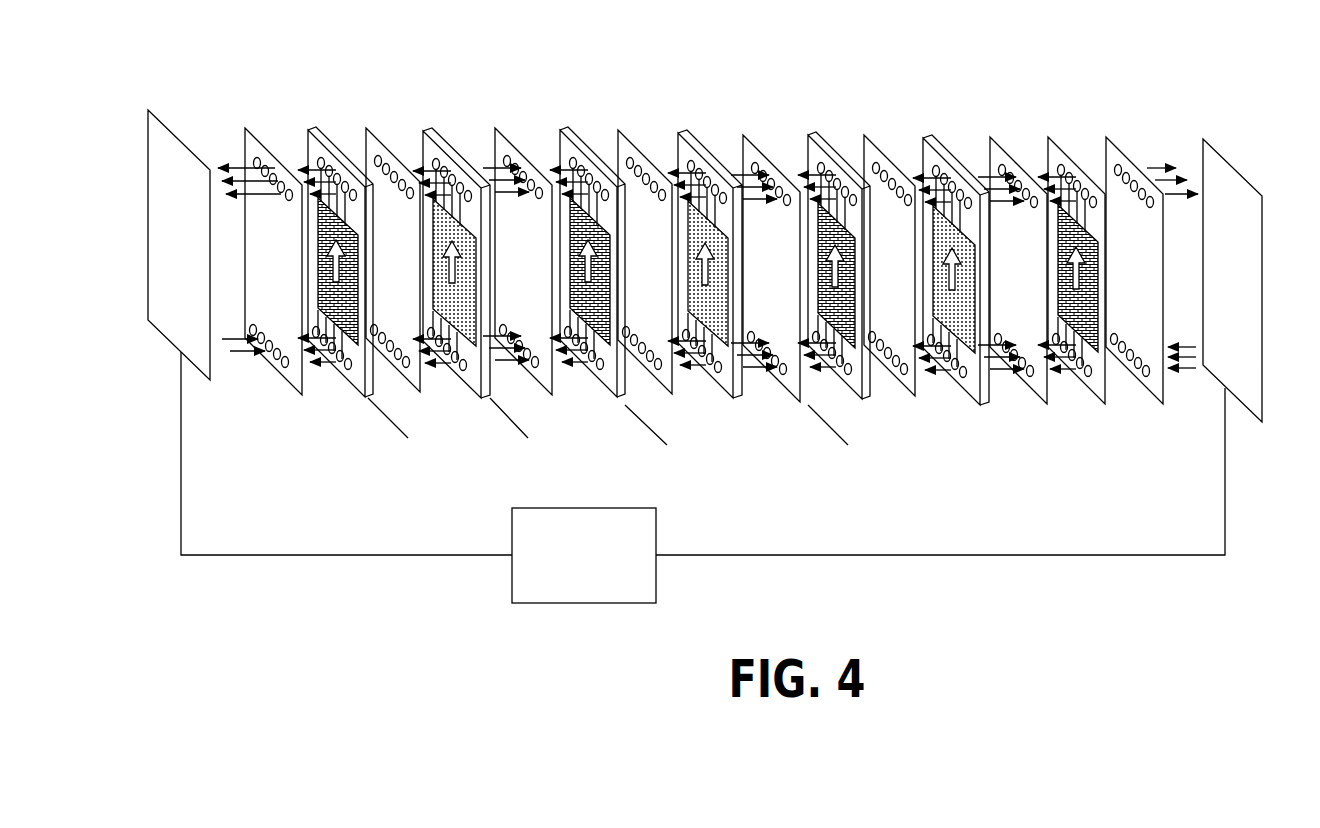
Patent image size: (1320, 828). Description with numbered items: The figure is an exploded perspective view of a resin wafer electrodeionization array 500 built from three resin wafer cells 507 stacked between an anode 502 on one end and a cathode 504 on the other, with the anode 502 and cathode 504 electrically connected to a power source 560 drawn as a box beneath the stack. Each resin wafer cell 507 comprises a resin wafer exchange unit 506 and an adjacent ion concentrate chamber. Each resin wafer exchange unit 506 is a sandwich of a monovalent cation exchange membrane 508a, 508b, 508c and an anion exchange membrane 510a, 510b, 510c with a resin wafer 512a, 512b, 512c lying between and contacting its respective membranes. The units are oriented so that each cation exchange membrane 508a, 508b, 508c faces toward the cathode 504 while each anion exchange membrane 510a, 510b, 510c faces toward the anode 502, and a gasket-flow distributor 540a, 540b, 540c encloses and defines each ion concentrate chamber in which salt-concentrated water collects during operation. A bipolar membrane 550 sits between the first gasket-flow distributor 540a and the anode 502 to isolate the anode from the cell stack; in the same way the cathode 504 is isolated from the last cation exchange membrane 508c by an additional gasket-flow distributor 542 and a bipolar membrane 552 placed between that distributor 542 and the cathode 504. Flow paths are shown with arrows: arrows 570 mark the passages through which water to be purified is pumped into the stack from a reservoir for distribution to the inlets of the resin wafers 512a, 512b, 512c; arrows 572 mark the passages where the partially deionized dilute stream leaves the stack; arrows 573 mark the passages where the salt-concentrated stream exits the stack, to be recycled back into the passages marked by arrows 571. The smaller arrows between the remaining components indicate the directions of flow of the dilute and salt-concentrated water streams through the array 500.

The array 500 is at (1034, 580).
The anode 502 is at (163, 122).
The cathode 504 is at (1230, 167).
The resin wafer exchange unit 506 is at (510, 422).
The resin wafer cell 507 is at (650, 427).
The monovalent cation exchange membrane 508a is at (518, 122).
The monovalent cation exchange membrane 508b is at (765, 120).
The monovalent cation exchange membrane 508c is at (1014, 130).
The anion exchange membrane 510a is at (375, 110).
The anion exchange membrane 510b is at (628, 108).
The anion exchange membrane 510c is at (876, 115).
The resin wafer 512a is at (448, 112).
The resin wafer 512b is at (705, 118).
The resin wafer 512c is at (952, 125).
The gasket-flow distributor 540a is at (330, 125).
The gasket-flow distributor 540b is at (585, 120).
The gasket-flow distributor 540c is at (833, 128).
The additional gasket-flow distributor 542 is at (1072, 130).
The bipolar membrane 550 is at (270, 127).
The bipolar membrane 552 is at (1115, 150).
The power source 560 is at (640, 573).
The arrows 570 is at (232, 351).
The arrows 571 is at (1193, 368).
The arrows 572 is at (1172, 182).
The arrows 573 is at (245, 192).